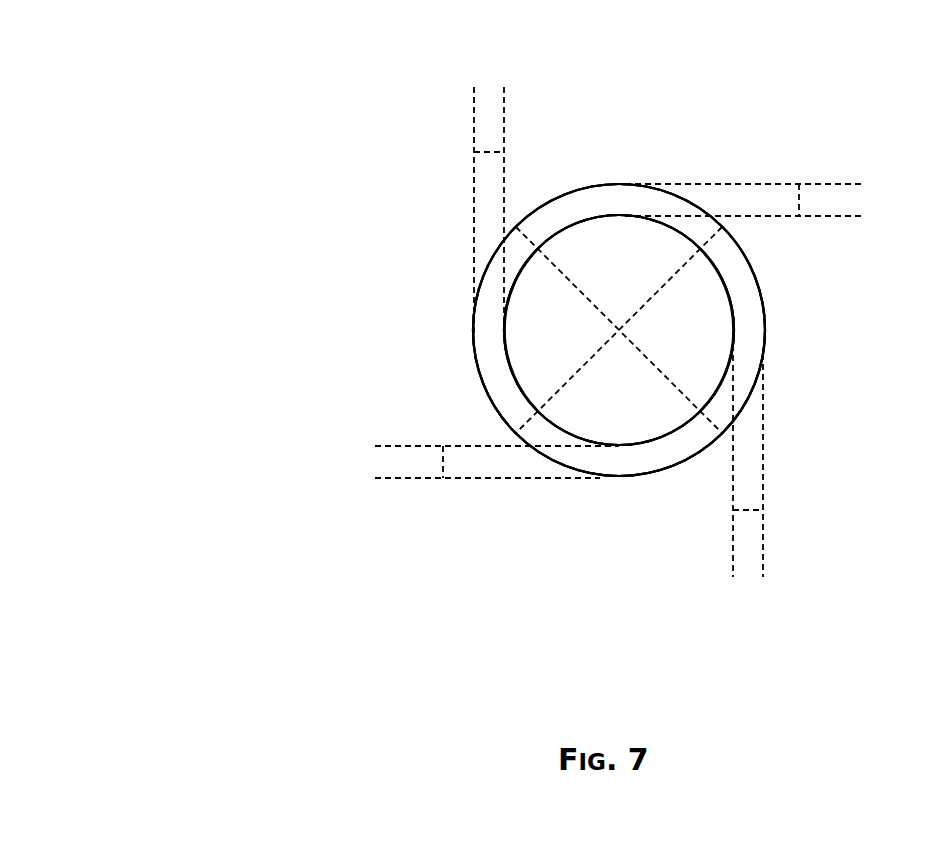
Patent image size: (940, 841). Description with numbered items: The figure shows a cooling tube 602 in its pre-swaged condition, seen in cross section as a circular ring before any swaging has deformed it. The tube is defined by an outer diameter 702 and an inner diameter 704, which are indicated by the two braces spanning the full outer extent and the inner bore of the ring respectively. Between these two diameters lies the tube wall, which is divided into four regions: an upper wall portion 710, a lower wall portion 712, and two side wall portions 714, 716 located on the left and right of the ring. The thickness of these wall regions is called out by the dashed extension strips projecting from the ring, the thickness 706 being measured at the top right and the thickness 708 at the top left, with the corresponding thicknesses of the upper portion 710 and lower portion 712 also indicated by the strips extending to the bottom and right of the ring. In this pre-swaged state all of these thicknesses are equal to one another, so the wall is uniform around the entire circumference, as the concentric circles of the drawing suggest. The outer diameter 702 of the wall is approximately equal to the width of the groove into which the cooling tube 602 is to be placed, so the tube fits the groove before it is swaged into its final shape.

The cooling tube (pre-swaged) 602 is at (812, 103).
The outer diameter 702 is at (168, 185).
The inner diameter 704 is at (307, 219).
The thickness 706 is at (801, 200).
The thickness 708 is at (492, 150).
The upper wall portion 710 is at (441, 463).
The lower wall portion 712 is at (748, 512).
The side wall portion 714 is at (502, 372).
The side wall portion 716 is at (750, 332).